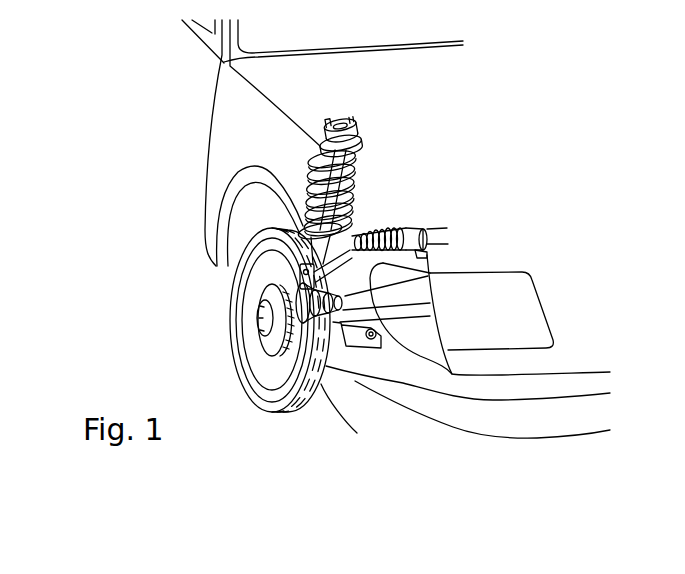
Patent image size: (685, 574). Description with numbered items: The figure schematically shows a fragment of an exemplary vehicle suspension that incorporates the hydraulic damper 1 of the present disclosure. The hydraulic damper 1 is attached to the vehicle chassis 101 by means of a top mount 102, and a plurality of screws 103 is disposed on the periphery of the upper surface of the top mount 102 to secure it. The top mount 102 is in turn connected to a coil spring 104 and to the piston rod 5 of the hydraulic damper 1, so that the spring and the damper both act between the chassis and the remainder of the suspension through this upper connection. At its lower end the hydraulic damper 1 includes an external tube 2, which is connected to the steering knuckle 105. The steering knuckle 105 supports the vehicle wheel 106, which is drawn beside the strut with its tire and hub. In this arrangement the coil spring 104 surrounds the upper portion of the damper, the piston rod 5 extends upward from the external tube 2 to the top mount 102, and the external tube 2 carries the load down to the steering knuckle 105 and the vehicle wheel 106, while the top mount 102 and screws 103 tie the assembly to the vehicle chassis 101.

The hydraulic damper 1 is at (366, 222).
The external tube 2 is at (302, 218).
The piston rod 5 is at (358, 188).
The vehicle chassis 101 is at (220, 70).
The top mount 102 is at (362, 144).
The screws 103 is at (327, 115).
The coil spring 104 is at (355, 168).
The steering knuckle 105 is at (297, 280).
The vehicle wheel 106 is at (250, 387).